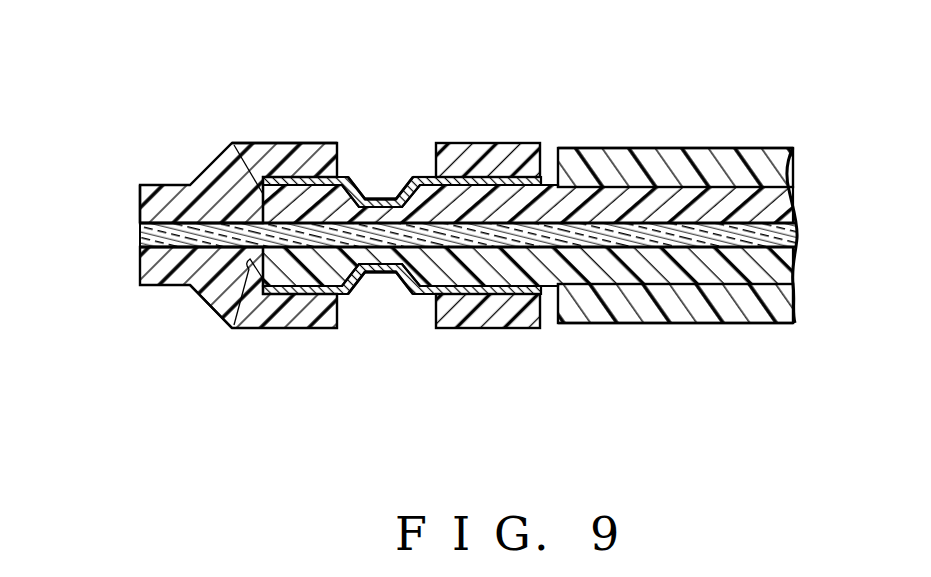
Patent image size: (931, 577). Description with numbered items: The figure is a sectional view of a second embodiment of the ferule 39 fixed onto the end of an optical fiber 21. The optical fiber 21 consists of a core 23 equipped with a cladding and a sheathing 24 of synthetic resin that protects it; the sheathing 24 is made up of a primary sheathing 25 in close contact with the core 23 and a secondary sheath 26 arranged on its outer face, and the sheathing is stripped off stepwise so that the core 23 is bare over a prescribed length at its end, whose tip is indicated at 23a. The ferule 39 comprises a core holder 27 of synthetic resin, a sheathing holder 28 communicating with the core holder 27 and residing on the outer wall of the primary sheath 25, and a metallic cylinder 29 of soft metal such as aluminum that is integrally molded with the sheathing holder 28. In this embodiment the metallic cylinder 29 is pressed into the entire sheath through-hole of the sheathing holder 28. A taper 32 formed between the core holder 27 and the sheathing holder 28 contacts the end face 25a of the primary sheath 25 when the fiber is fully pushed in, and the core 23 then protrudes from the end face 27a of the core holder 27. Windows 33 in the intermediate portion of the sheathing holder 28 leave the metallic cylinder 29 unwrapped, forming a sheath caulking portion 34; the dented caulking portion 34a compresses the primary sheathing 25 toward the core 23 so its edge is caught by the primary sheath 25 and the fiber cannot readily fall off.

The optical fiber 21 is at (702, 138).
The core 23 is at (797, 238).
The end of center conductor 23a is at (140, 243).
The sheathing 24 is at (762, 390).
The primary sheathing 25 is at (593, 268).
The end face of the primary sheath 25a is at (246, 196).
The secondary sheath 26 is at (727, 310).
The core holder 27 is at (163, 184).
The end face of the core holder 27a is at (141, 218).
The sheathing holder 28 is at (510, 327).
The metallic cylinder 29 is at (420, 174).
The taper 32 is at (214, 320).
The windows 33 is at (343, 174).
The sheath caulking portion 34 is at (380, 176).
The caulking portion 34a is at (395, 184).
The ferule 39 is at (350, 116).